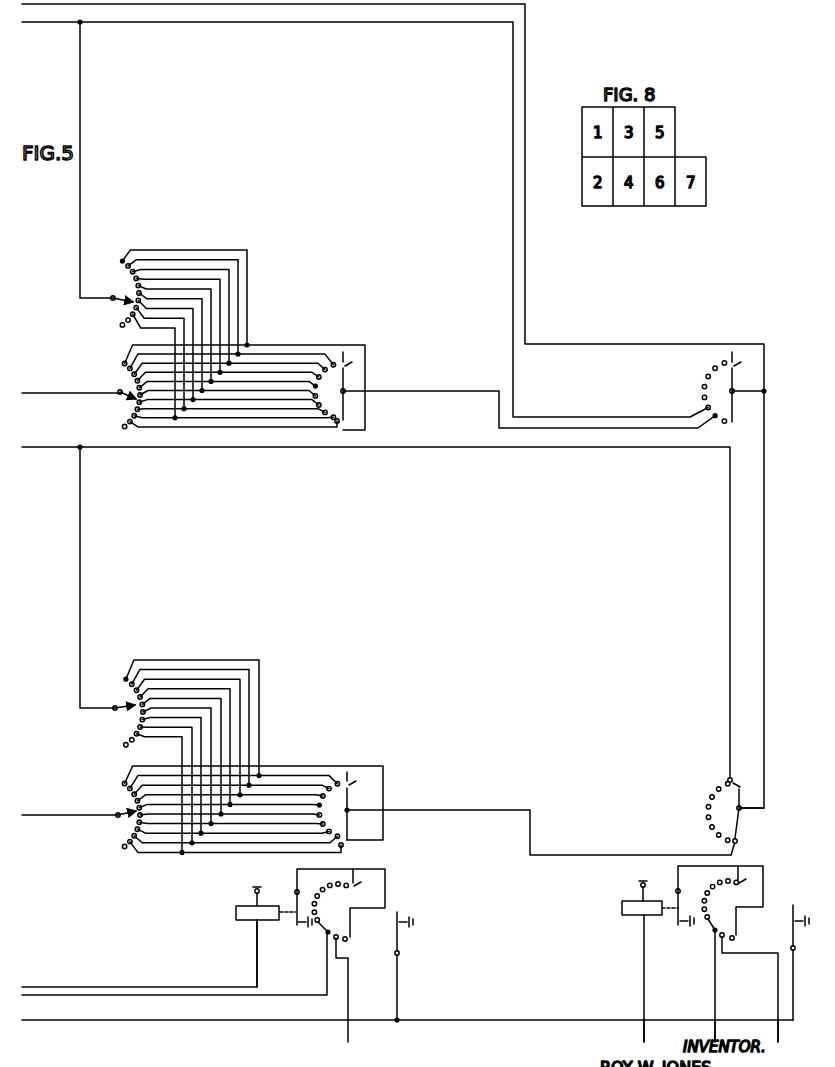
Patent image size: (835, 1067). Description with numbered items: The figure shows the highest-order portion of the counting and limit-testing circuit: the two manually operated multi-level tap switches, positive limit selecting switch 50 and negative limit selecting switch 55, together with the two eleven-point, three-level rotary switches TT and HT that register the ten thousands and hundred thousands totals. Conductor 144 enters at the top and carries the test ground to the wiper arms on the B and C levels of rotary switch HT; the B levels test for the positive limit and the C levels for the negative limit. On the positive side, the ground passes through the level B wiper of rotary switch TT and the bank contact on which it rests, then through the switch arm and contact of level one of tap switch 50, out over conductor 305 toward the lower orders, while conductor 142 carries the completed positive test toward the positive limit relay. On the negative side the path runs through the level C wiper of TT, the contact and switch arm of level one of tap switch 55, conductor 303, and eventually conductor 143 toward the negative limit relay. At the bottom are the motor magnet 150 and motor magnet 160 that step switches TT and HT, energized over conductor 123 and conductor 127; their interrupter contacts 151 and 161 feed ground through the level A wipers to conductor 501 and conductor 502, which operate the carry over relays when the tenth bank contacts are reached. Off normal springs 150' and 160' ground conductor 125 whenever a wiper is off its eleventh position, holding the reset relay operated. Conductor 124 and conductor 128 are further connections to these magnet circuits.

The conductor 144 is at (58, 5).
The conductor 143 is at (58, 24).
The conductor 142 is at (61, 450).
The conductor 303 is at (56, 404).
The conductor 305 is at (56, 826).
The negative limit selecting switch 55 is at (434, 331).
The positive limit selecting switch 50 is at (433, 749).
The conductor 123 is at (52, 992).
The conductor 124 is at (51, 1000).
The conductor 125 is at (51, 1026).
The conductor 501 is at (348, 1030).
The motor magnet 150 is at (252, 937).
The contacts 151 is at (303, 929).
The off normal springs 150' is at (419, 966).
The motor magnet 160 is at (633, 961).
The contacts 161 is at (694, 933).
The off normal springs 160' is at (800, 950).
The conductor 127 is at (643, 1030).
The conductor 128 is at (715, 1030).
The conductor 502 is at (778, 1032).